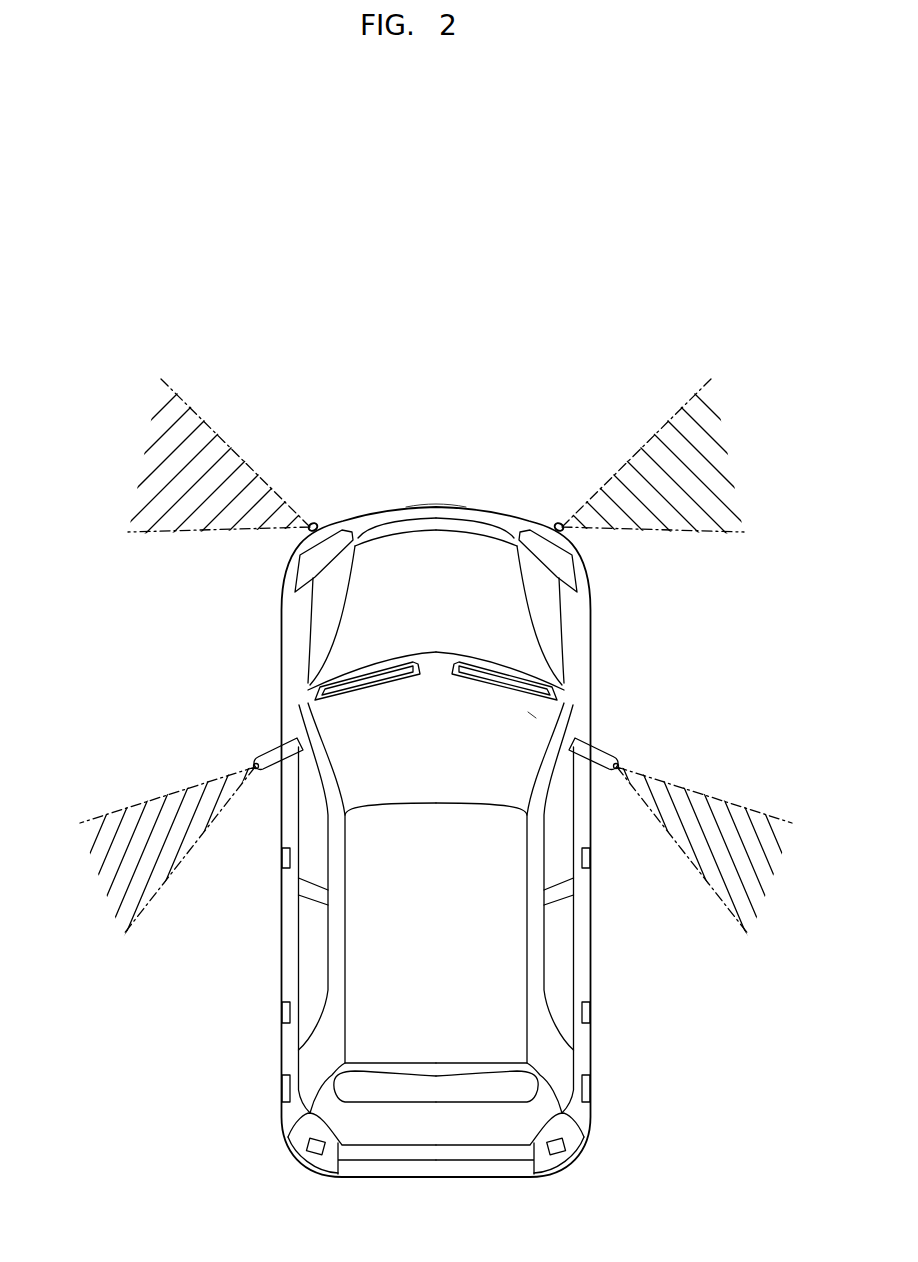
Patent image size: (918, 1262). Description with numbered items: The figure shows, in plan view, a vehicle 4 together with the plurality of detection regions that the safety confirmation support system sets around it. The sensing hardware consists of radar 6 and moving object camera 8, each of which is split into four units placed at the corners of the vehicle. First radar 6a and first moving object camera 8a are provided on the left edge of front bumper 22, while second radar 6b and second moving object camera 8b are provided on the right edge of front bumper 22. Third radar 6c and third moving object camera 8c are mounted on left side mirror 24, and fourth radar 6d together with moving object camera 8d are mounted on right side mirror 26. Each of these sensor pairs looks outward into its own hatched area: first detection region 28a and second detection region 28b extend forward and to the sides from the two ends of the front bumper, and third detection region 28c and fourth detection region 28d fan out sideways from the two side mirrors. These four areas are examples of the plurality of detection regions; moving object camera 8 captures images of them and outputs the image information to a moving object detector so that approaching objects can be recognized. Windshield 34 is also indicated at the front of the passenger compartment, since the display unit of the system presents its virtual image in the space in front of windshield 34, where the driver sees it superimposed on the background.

The vehicle 4 is at (594, 600).
The radar 6 is at (342, 449).
The moving object camera 8 is at (337, 446).
The first radar 6a is at (342, 494).
The first moving object camera 8a is at (313, 522).
The second radar 6b is at (552, 494).
The second moving object camera 8b is at (559, 522).
The third radar 6c is at (214, 739).
The third moving object camera 8c is at (253, 765).
The fourth radar 6d is at (661, 741).
The moving object camera 8d is at (619, 765).
The front bumper 22 is at (437, 506).
The left side mirror 24 is at (273, 750).
The right side mirror 26 is at (600, 747).
The first detection region 28a is at (215, 450).
The second detection region 28b is at (657, 450).
The third detection region 28c is at (157, 810).
The fourth detection region 28d is at (713, 808).
The windshield 34 is at (532, 715).